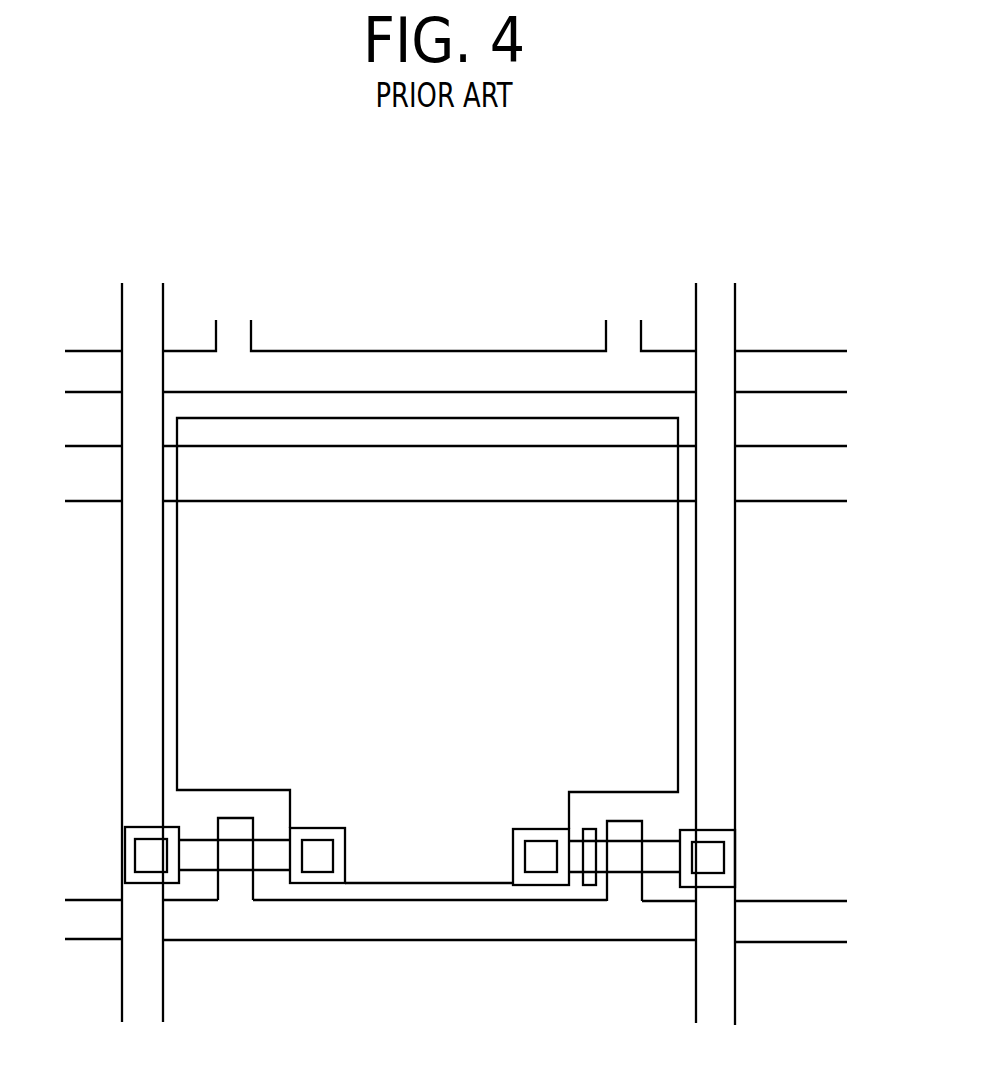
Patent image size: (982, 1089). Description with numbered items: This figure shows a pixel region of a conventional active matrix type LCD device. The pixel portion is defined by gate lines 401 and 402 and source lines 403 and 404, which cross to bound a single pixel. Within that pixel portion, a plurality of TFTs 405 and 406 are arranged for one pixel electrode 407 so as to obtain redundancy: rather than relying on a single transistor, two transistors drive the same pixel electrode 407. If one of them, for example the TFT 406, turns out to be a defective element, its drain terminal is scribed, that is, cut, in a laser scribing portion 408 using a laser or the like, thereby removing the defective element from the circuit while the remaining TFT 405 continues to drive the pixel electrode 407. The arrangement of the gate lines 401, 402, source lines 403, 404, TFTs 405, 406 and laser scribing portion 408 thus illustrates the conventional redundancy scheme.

The gate line 401 is at (790, 350).
The gate line 402 is at (800, 901).
The source line 403 is at (143, 1018).
The source line 404 is at (722, 1015).
The TFT 405 is at (270, 873).
The TFT 406 is at (662, 873).
The pixel electrode 407 is at (678, 660).
The laser scribing portion 408 is at (581, 887).